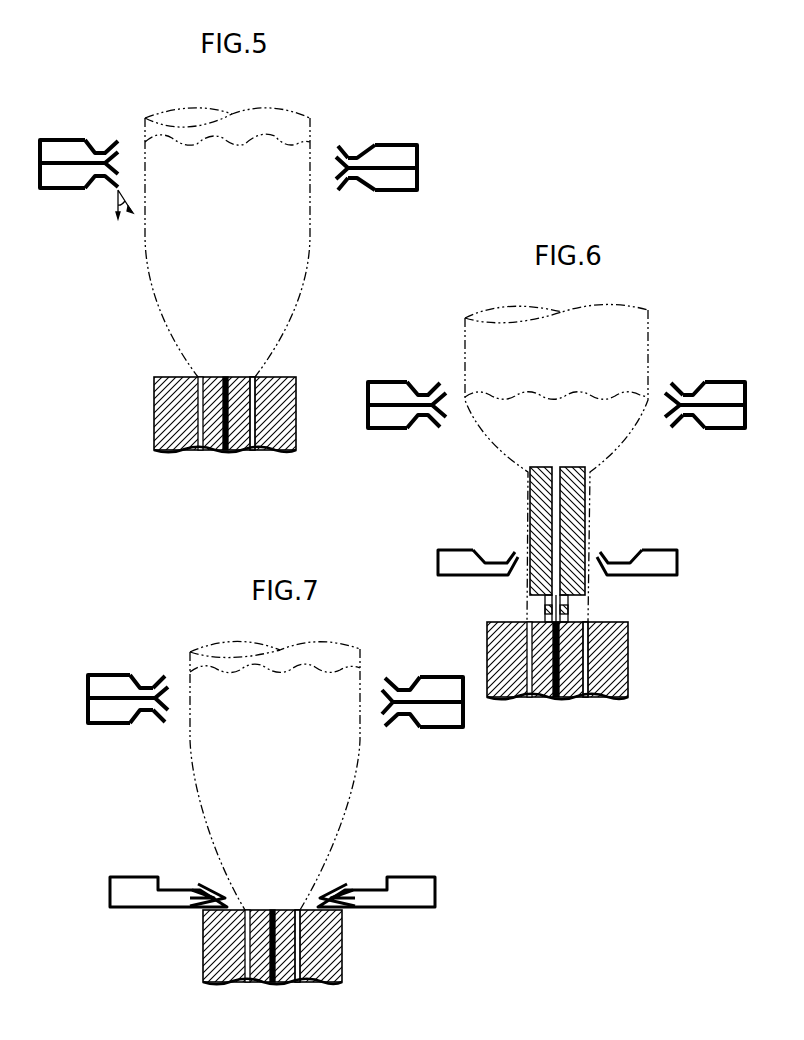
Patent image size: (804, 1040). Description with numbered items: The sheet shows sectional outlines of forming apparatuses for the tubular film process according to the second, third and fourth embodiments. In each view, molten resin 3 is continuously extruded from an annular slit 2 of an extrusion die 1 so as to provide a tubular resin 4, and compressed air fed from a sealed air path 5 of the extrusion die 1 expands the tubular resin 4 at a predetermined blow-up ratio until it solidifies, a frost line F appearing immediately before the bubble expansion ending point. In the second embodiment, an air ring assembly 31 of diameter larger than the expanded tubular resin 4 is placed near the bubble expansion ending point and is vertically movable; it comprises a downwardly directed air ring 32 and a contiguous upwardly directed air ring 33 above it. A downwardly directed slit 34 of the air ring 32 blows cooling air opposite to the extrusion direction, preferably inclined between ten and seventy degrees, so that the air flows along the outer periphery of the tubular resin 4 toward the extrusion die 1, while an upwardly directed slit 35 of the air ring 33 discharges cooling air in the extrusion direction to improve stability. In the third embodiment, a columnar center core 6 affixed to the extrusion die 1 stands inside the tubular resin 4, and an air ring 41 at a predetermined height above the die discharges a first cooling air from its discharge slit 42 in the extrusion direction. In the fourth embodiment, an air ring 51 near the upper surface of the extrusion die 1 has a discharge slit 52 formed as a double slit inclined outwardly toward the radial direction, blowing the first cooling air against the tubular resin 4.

In FIG. 5, the extrusion die 1 is at (296, 432).
In FIG. 6, the extrusion die 1 is at (628, 670).
In FIG. 7, the extrusion die 1 is at (342, 961).
In FIG. 5, the annular slit 2 is at (258, 377).
In FIG. 6, the annular slit 2 is at (586, 622).
In FIG. 7, the annular slit 2 is at (300, 910).
In FIG. 5, the molten resin 3 is at (264, 398).
In FIG. 6, the molten resin 3 is at (590, 646).
In FIG. 7, the molten resin 3 is at (300, 935).
In FIG. 5, the tubular resin 4 is at (304, 284).
In FIG. 6, the tubular resin 4 is at (520, 480).
In FIG. 7, the tubular resin 4 is at (355, 793).
In FIG. 5, the sealed air path 5 is at (228, 452).
In FIG. 6, the sealed air path 5 is at (556, 698).
In FIG. 7, the sealed air path 5 is at (273, 983).
In FIG. 6, the columnar center core 6 is at (577, 497).
In FIG. 5, the air ring assembly 31 is at (417, 169).
In FIG. 6, the air ring assembly 31 is at (730, 409).
In FIG. 7, the air ring assembly 31 is at (93, 698).
In FIG. 5, the downwardly directed air ring 32 is at (403, 195).
In FIG. 6, the downwardly directed air ring 32 is at (745, 432).
In FIG. 7, the downwardly directed air ring 32 is at (102, 724).
In FIG. 5, the upwardly directed air ring 33 is at (406, 145).
In FIG. 6, the upwardly directed air ring 33 is at (725, 382).
In FIG. 7, the upwardly directed air ring 33 is at (102, 675).
In FIG. 5, the downwardly directed slit 34 is at (340, 190).
In FIG. 6, the downwardly directed slit 34 is at (671, 428).
In FIG. 7, the downwardly directed slit 34 is at (161, 721).
In FIG. 5, the upwardly directed slit 35 is at (340, 146).
In FIG. 6, the upwardly directed slit 35 is at (671, 382).
In FIG. 7, the upwardly directed slit 35 is at (161, 678).
In FIG. 6, the air ring 41 is at (663, 550).
In FIG. 6, the discharge slit 42 is at (601, 551).
In FIG. 7, the air ring 51 is at (125, 880).
In FIG. 7, the discharge slit 52 is at (200, 884).
In FIG. 5, the frost line F is at (287, 141).
In FIG. 6, the frost line F is at (588, 397).
In FIG. 7, the frost line F is at (328, 672).